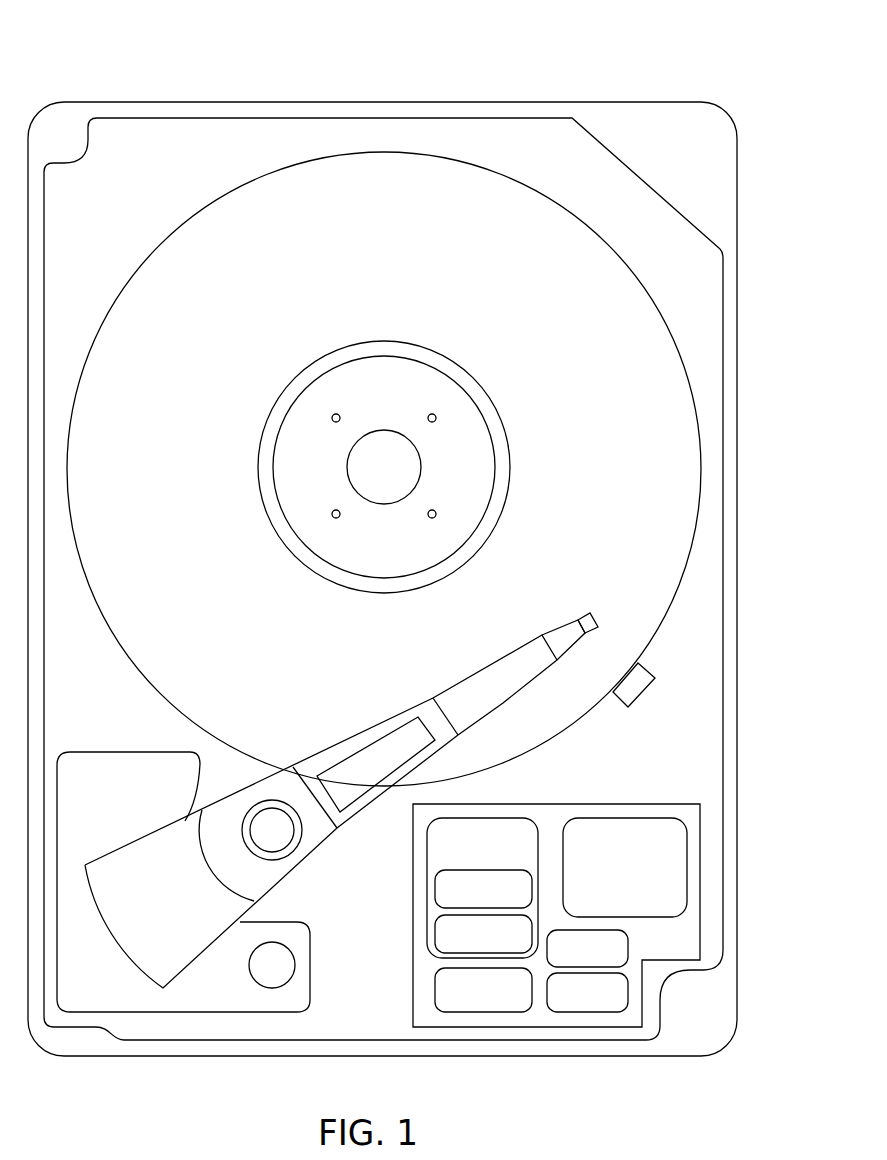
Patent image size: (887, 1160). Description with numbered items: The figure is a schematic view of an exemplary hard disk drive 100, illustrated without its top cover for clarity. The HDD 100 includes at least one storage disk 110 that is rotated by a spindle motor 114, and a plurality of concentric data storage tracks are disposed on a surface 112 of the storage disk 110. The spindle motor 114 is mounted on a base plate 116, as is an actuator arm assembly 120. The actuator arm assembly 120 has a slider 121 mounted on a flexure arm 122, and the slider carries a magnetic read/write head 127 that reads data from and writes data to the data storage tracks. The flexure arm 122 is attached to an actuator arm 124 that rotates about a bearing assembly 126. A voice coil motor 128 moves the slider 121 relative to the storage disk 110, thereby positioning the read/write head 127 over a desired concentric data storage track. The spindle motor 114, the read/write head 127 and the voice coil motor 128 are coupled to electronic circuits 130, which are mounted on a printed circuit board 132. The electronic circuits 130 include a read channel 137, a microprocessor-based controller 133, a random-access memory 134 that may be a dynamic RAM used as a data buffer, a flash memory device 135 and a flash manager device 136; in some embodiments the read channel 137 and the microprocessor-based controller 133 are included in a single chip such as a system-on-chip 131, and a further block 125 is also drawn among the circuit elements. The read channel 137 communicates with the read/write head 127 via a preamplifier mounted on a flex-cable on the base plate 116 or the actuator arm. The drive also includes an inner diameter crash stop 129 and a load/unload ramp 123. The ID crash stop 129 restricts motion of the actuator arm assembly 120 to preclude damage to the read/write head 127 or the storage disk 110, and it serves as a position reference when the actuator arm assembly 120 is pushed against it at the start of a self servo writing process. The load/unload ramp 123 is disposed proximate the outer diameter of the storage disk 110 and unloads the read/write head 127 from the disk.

The hard disk drive 100 is at (122, 72).
The storage disk 110 is at (160, 243).
The surface 112 is at (188, 449).
The spindle motor 114 is at (478, 408).
The base plate 116 is at (725, 604).
The actuator arm assembly 120 is at (329, 712).
The slider 121 is at (593, 615).
The flexure arm 122 is at (552, 628).
The load/unload ramp 123 is at (657, 690).
The actuator arm 124 is at (457, 682).
The memory block 125 is at (503, 1002).
The bearing assembly 126 is at (290, 860).
The magnetic read/write head 127 is at (588, 590).
The voice coil motor 128 is at (313, 953).
The inner diameter crash stop 129 is at (276, 988).
The electronic circuits 130 is at (562, 814).
The system-on-chip 131 is at (502, 860).
The printed circuit board 132 is at (640, 804).
The microprocessor-based controller 133 is at (503, 903).
The random-access memory 134 is at (607, 961).
The flash memory device 135 is at (645, 880).
The flash manager device 136 is at (607, 1006).
The read channel 137 is at (503, 950).